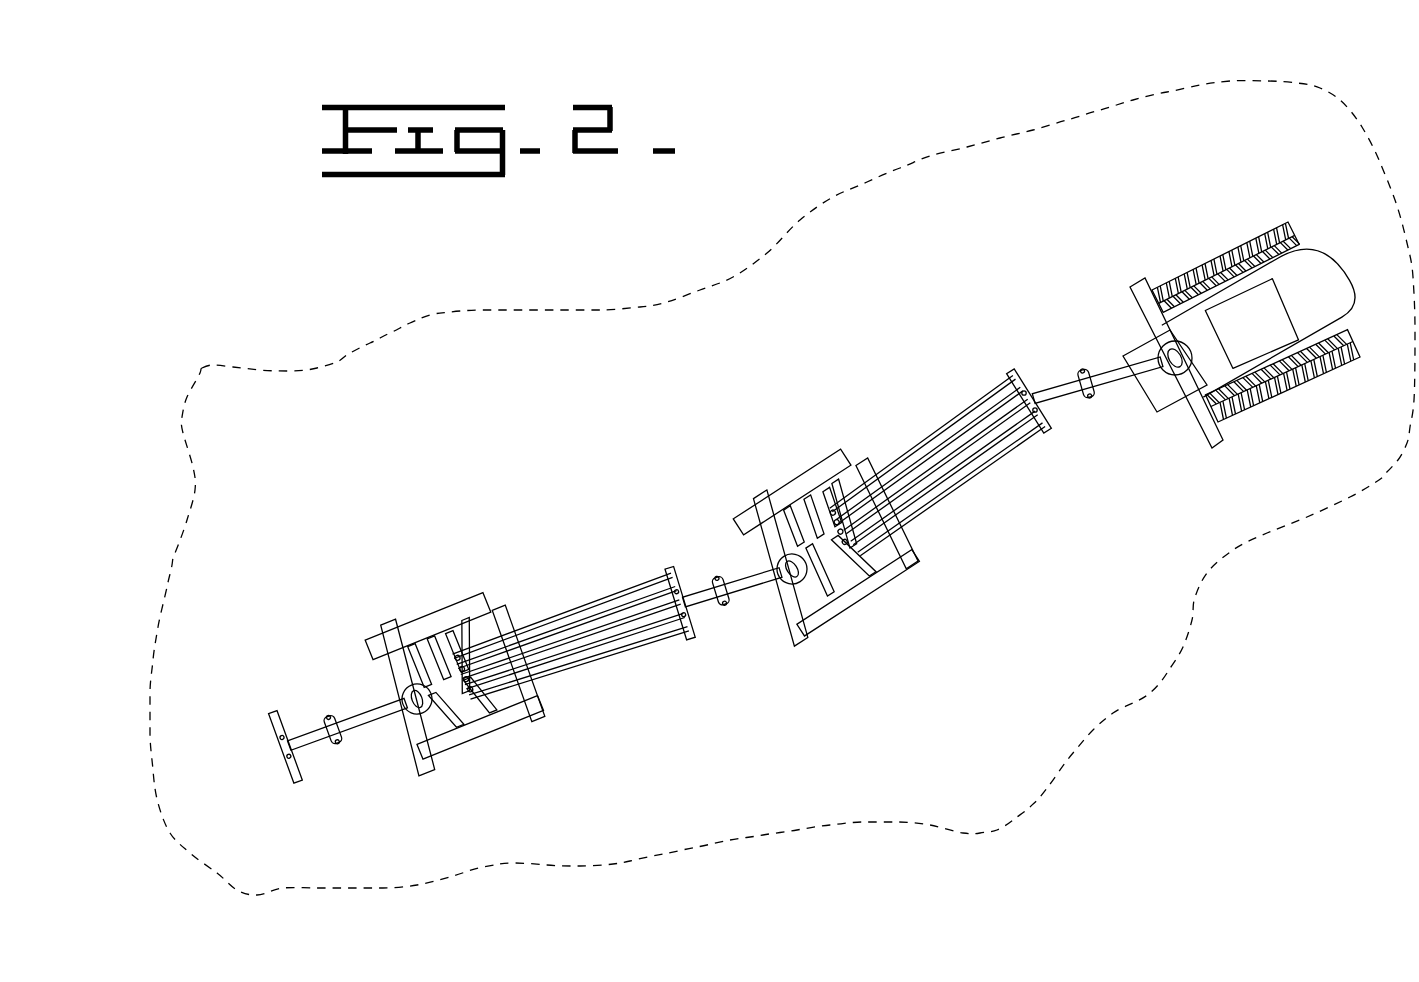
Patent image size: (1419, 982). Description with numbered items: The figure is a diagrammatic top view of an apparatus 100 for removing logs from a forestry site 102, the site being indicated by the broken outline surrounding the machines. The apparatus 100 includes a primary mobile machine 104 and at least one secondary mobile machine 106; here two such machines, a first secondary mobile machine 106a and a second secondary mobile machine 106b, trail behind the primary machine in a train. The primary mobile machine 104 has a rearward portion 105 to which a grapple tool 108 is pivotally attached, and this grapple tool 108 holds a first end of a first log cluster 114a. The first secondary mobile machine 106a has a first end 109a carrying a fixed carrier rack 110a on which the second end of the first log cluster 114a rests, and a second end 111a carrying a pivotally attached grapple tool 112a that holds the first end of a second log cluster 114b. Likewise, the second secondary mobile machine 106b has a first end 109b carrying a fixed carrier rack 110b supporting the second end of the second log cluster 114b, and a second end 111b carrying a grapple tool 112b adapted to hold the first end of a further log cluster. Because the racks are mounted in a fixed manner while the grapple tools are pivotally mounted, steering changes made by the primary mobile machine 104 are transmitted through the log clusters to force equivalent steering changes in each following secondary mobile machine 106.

The apparatus 100 is at (228, 261).
The forestry site 102 is at (366, 352).
The primary mobile machine 104 is at (1325, 252).
The rearward portion 105 is at (1142, 393).
The secondary mobile machine 106 is at (438, 648).
The first secondary mobile machine 106a is at (819, 526).
The second secondary mobile machine 106b is at (438, 656).
The grapple tool 108 is at (1075, 407).
The first end of first secondary mobile machine 109a is at (915, 531).
The first end of second secondary mobile machine 109b is at (533, 686).
The fixed carrier rack 110a is at (823, 465).
The fixed carrier rack 110b is at (460, 594).
The second end of first secondary mobile machine 111a is at (737, 552).
The second end of second secondary mobile machine 111b is at (397, 740).
The grapple tool 112a is at (703, 570).
The grapple tool 112b is at (323, 723).
The first log cluster 114a is at (975, 412).
The second log cluster 114b is at (633, 585).